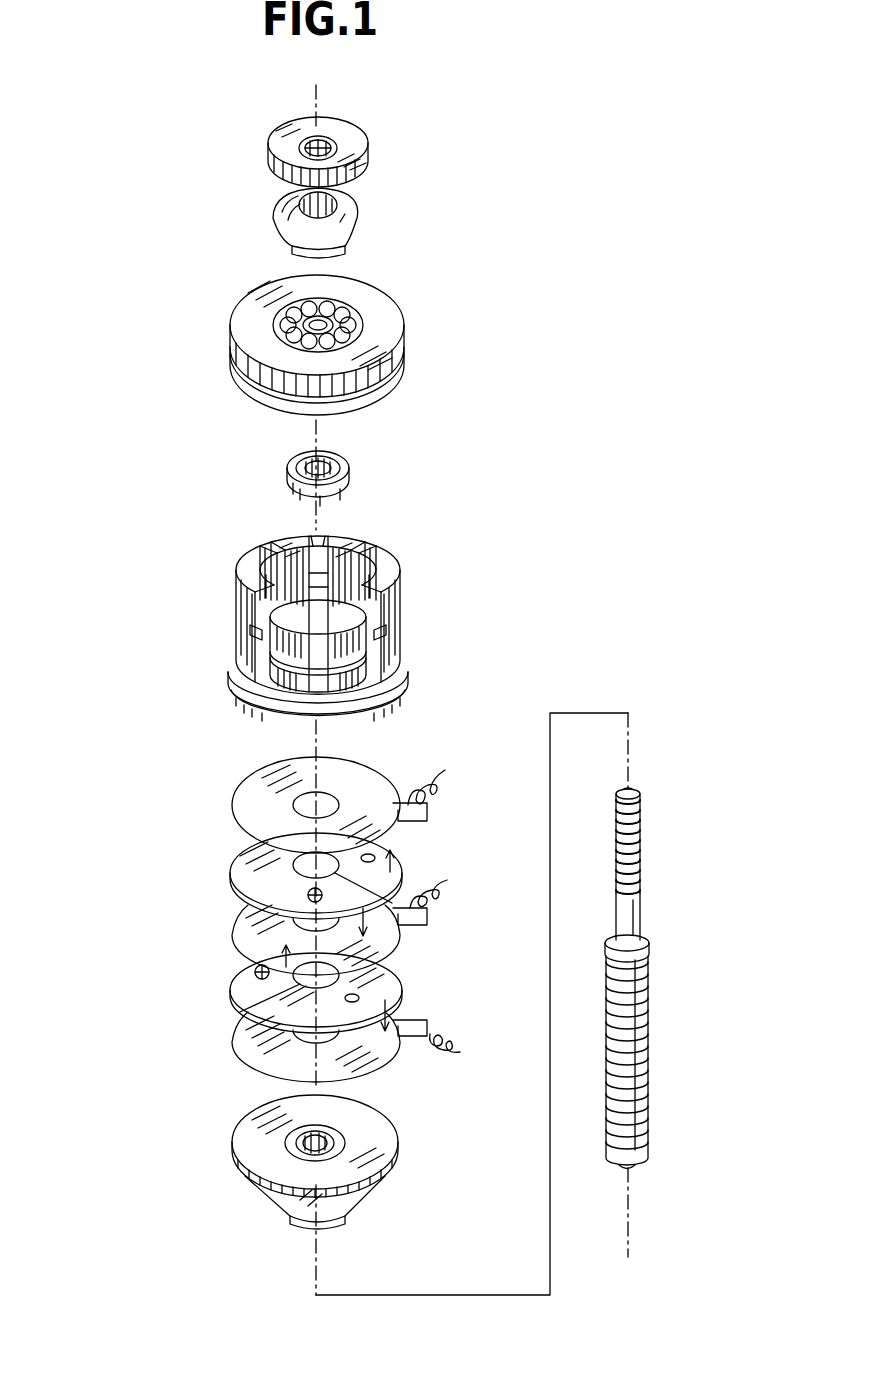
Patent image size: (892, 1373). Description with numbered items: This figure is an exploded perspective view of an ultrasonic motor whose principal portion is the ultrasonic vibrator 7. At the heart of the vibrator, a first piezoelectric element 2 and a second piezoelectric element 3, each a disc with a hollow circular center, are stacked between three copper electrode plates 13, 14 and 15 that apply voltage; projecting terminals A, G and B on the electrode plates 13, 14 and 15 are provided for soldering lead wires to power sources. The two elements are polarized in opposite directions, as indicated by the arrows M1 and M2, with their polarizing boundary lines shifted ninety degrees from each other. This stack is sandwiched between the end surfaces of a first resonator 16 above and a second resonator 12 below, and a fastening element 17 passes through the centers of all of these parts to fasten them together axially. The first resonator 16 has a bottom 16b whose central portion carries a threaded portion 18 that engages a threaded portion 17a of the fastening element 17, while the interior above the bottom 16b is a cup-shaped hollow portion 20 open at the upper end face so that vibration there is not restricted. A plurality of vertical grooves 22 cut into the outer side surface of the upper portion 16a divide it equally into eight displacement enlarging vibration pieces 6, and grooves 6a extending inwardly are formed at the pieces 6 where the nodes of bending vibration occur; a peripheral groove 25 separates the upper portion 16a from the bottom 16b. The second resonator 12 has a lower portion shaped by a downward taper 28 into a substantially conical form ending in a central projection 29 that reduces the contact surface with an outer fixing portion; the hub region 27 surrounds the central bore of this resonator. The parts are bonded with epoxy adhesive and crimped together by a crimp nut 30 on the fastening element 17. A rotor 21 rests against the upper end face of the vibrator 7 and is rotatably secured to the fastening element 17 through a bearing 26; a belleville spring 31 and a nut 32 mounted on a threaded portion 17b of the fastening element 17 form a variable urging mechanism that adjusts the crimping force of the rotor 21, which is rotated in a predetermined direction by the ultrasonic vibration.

The nut 32 is at (375, 135).
The belleville spring 31 is at (365, 218).
The bearing 26 is at (292, 318).
The rotor 21 is at (341, 336).
The crimp nut 30 is at (345, 470).
The hollow portion 20 is at (296, 562).
The vertical grooves 22 is at (356, 545).
The threaded portion 18 is at (322, 625).
The displacement enlarging vibration pieces 6 is at (250, 565).
The grooves 6a is at (385, 648).
The upper portion 16a is at (342, 614).
The bottom 16b is at (348, 706).
The first resonator 16 is at (371, 614).
The peripheral groove 25 is at (285, 700).
The ultrasonic vibrator 7 is at (90, 1187).
The electrode plate 13 is at (319, 804).
The first piezoelectric element 2 is at (322, 879).
The electrode plate 14 is at (246, 920).
The second piezoelectric element 3 is at (329, 1009).
The electrode plate 15 is at (256, 1050).
The second resonator 12 is at (300, 1168).
The central bearing 27 is at (340, 1140).
The taper 28 is at (340, 1206).
The projection 29 is at (306, 1222).
The fastening element 17 is at (663, 963).
The threaded portion 17a is at (632, 1050).
The threaded portion 17b is at (640, 840).
The terminal A is at (441, 780).
The terminal G is at (441, 891).
The terminal B is at (459, 1050).
The polarization direction arrow M1 is at (400, 868).
The polarization direction arrow M2 is at (378, 912).